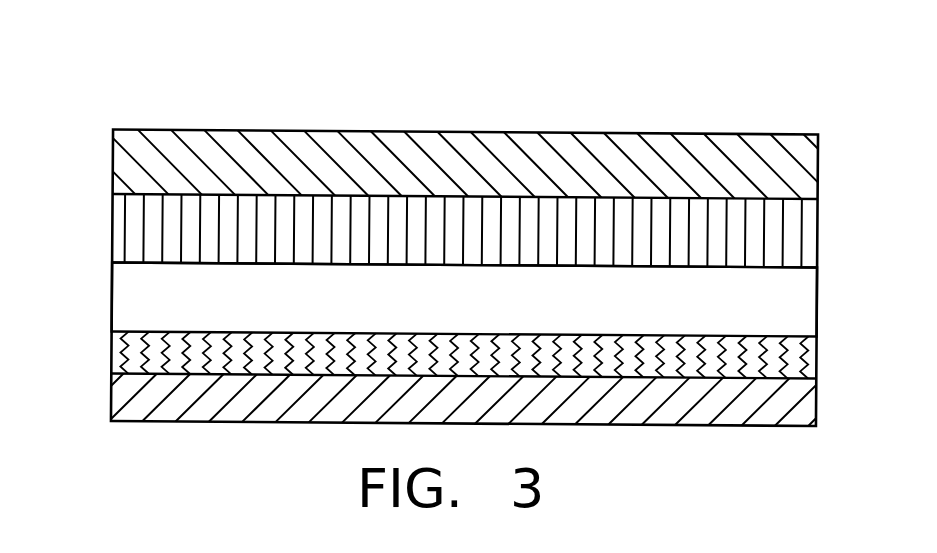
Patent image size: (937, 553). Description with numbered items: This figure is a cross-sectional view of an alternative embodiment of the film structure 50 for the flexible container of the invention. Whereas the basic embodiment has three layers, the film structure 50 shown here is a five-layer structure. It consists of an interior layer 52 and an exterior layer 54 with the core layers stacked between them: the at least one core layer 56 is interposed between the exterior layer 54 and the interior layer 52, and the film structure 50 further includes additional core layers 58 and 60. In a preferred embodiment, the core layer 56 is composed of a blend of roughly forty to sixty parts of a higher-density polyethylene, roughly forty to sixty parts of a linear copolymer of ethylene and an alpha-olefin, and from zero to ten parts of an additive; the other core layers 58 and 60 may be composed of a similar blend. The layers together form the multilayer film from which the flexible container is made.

The film structure 50 is at (118, 108).
The interior layer 52 is at (818, 168).
The additional core layer 58 is at (818, 245).
The core layer 56 is at (818, 310).
The additional core layer 60 is at (818, 360).
The exterior layer 54 is at (822, 412).